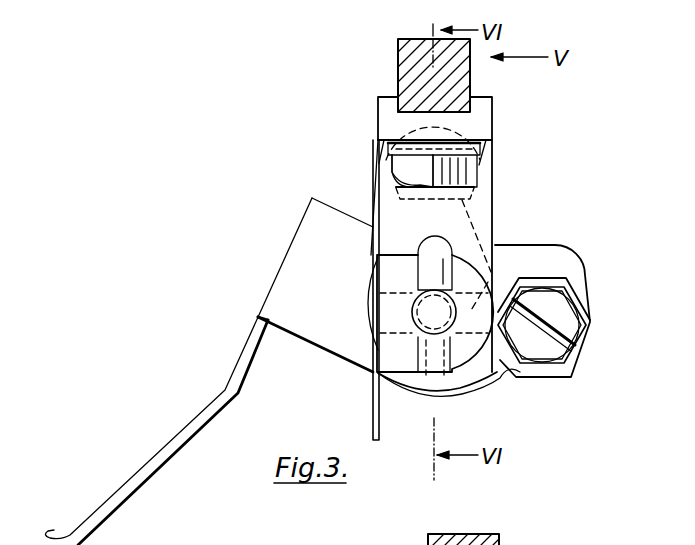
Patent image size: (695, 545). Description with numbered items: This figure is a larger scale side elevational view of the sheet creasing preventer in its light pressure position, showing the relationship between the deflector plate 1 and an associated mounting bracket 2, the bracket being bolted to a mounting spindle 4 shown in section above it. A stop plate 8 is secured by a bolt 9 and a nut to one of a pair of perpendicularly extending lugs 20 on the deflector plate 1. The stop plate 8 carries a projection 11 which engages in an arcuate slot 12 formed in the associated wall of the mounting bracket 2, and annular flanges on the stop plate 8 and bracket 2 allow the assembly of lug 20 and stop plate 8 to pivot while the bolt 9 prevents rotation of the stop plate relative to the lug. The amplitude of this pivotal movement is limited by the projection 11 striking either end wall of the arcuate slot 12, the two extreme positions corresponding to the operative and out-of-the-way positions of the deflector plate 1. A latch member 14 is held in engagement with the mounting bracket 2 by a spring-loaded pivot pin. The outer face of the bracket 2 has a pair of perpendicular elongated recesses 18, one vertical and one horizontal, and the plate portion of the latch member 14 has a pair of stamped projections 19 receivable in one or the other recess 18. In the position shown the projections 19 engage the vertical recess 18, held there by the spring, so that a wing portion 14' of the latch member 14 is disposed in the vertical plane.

The deflector plate 1 is at (252, 338).
The mounting bracket 2 is at (378, 190).
The mounting spindle 4 is at (457, 92).
The stop plate 8 is at (465, 374).
The bolt 9 is at (570, 322).
The projection 11 is at (478, 163).
The arcuate slot 12 is at (482, 143).
The latch member 14 is at (455, 353).
The wing portion 14' is at (355, 290).
The elongated recesses 18 is at (453, 255).
The projections 19 is at (432, 365).
The lug 20 is at (326, 335).